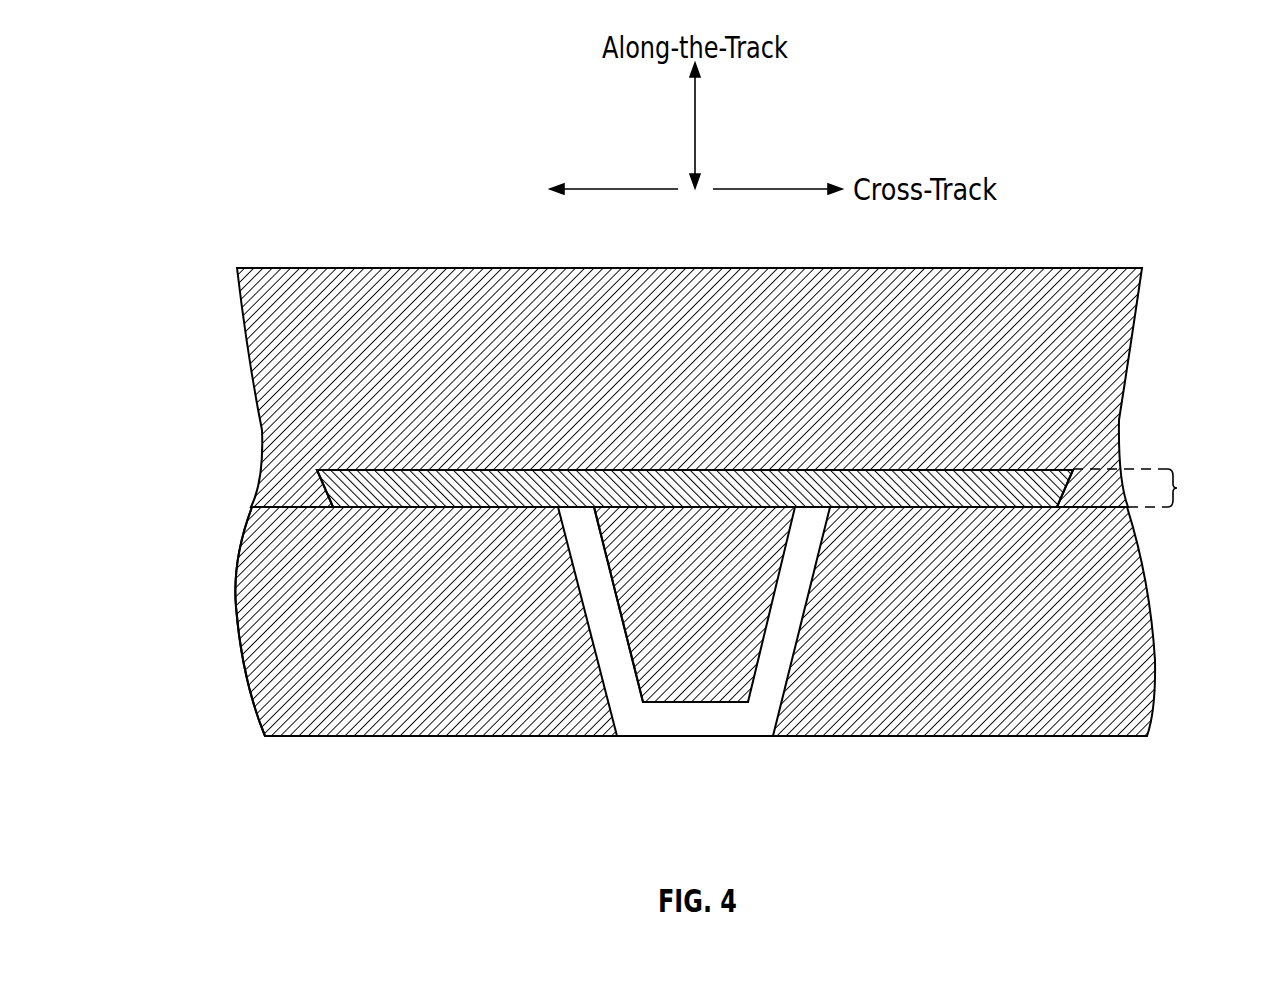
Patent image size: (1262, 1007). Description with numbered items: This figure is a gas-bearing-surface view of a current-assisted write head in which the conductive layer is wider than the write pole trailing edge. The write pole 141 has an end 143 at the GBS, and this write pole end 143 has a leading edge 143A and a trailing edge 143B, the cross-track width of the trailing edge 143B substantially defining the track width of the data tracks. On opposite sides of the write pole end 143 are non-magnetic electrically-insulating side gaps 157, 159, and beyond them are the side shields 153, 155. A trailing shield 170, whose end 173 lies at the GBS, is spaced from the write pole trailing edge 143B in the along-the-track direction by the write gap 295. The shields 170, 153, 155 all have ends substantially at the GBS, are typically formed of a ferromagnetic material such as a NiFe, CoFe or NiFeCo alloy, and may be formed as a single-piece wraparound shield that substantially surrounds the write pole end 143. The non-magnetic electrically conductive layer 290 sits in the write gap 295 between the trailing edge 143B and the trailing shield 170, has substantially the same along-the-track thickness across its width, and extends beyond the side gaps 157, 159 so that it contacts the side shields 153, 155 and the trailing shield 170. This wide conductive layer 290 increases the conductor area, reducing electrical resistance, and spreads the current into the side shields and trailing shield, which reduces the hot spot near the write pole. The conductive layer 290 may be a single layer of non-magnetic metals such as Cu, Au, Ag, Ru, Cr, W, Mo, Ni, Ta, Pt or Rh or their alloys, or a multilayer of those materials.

The trailing shield 170 is at (935, 268).
The end of trailing shield 173 is at (1103, 328).
The conductive layer 290 is at (797, 471).
The write gap 295 is at (1145, 488).
The side shield 153 is at (1128, 630).
The side shield 155 is at (278, 660).
The side gap 159 is at (603, 645).
The side gap 157 is at (788, 637).
The write pole end 143 is at (690, 672).
The write pole 141 is at (605, 567).
The leading edge 143A is at (670, 703).
The trailing edge 143B is at (723, 508).